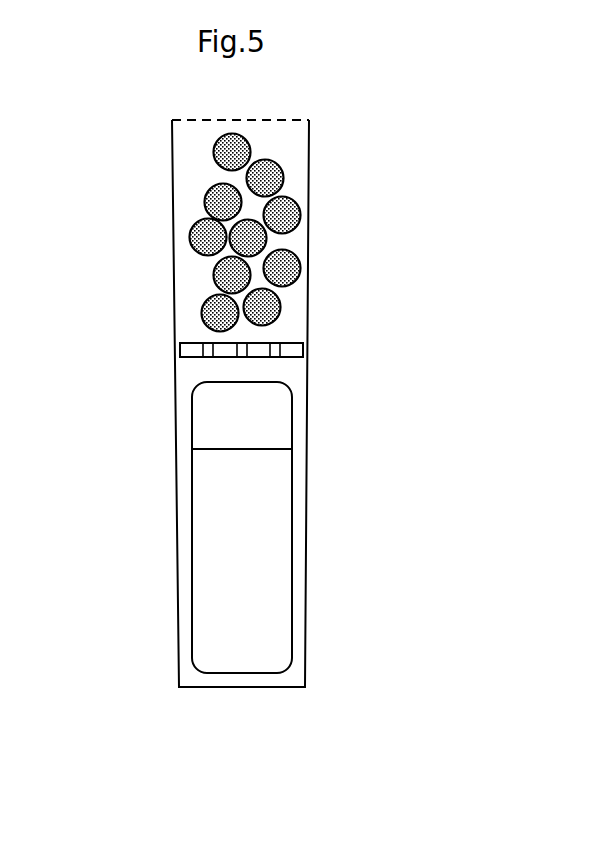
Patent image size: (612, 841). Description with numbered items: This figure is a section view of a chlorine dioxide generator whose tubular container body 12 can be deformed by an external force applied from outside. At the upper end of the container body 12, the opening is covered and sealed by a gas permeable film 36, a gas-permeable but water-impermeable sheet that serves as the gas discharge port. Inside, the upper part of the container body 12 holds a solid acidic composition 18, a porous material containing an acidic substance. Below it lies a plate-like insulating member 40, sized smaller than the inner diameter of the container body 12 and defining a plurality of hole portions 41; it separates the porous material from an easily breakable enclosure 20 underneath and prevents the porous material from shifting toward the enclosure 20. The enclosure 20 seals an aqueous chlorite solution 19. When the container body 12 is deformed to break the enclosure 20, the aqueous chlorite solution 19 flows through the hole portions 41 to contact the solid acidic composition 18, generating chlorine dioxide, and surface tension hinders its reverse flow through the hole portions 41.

The container body 12 is at (172, 220).
The gas permeable film 36 is at (276, 118).
The solid acidic composition 18 is at (293, 202).
The insulating member 40 is at (193, 344).
The hole portion 41 is at (275, 351).
The enclosure 20 is at (192, 433).
The aqueous chlorite solution 19 is at (268, 513).